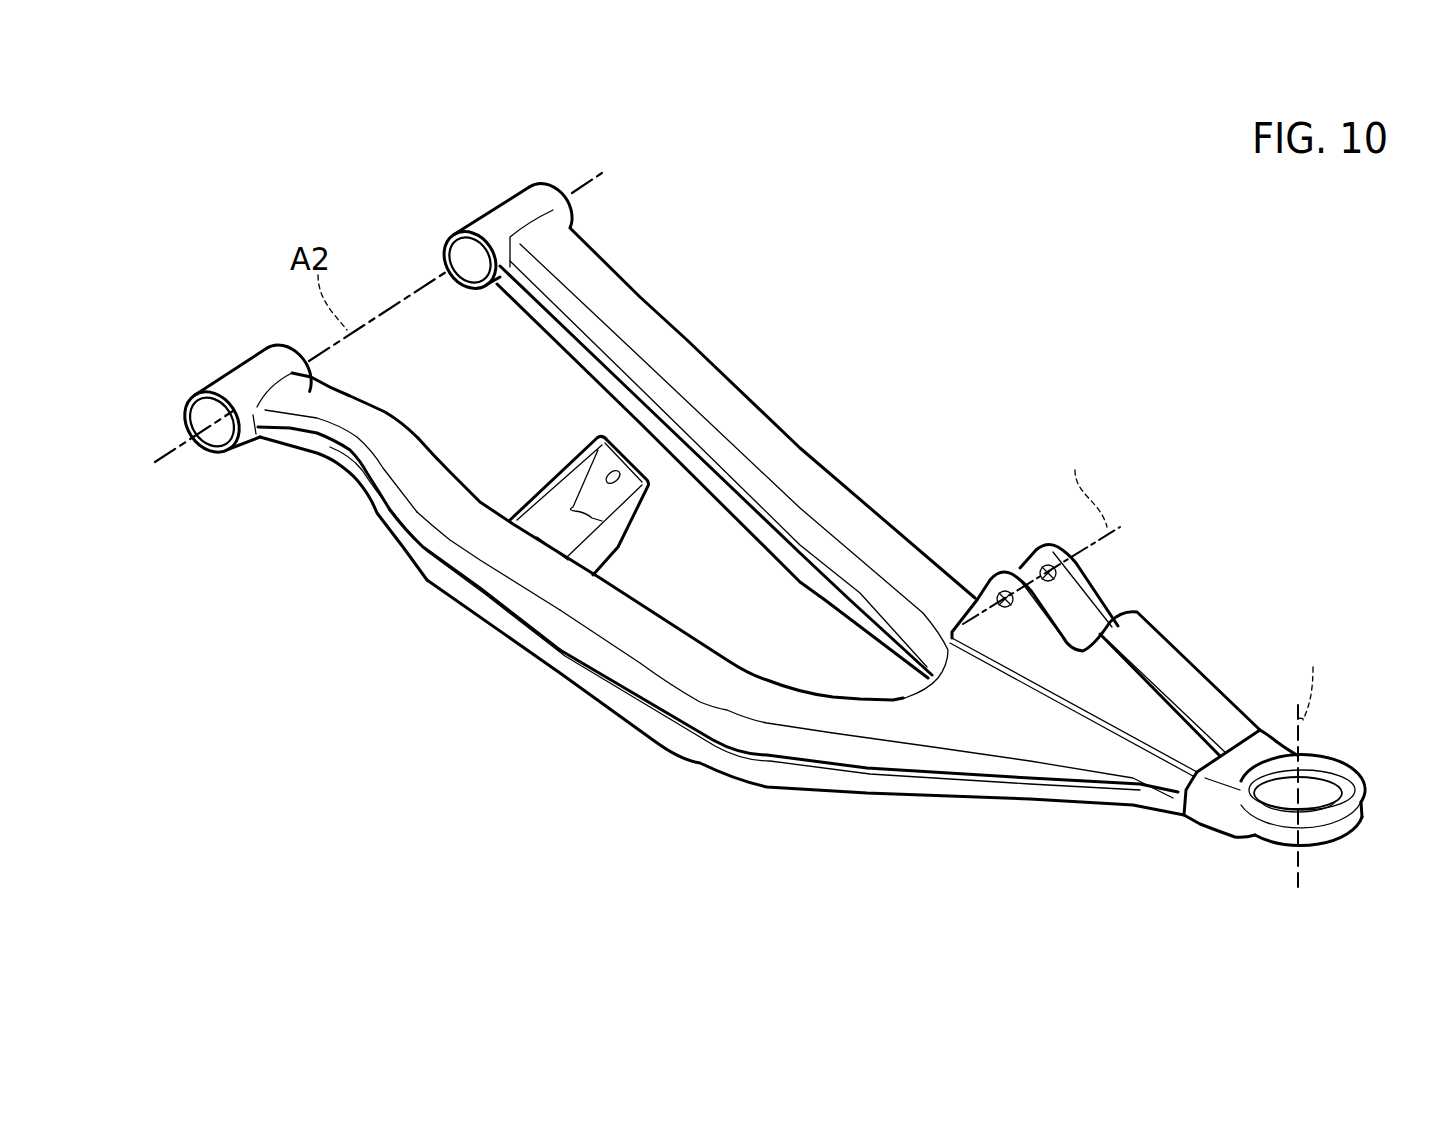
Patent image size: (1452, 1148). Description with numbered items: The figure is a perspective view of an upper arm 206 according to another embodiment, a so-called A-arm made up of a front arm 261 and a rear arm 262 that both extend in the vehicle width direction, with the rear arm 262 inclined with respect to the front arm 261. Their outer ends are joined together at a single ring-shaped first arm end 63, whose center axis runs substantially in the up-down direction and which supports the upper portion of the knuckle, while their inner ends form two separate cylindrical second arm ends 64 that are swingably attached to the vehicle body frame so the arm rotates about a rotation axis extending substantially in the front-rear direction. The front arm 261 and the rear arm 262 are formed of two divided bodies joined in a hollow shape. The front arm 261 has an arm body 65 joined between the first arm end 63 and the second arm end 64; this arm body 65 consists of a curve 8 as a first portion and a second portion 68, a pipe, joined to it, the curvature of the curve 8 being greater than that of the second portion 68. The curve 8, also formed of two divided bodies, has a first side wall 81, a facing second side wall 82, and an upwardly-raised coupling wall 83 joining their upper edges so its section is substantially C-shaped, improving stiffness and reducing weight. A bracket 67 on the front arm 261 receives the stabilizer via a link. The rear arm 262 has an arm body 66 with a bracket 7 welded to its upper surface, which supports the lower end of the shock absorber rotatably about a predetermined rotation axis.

The upper arm 206 is at (740, 235).
The front arm 261 is at (701, 594).
The rear arm 262 is at (736, 464).
The second arm end 64 is at (507, 210).
The arm body 65 is at (410, 585).
The arm body 66 is at (773, 445).
The bracket 67 is at (557, 470).
The second portion 68 is at (492, 578).
The bracket 7 is at (1170, 668).
The curve 8 is at (386, 532).
The first side wall 81 is at (290, 428).
The second side wall 82 is at (350, 405).
The coupling wall 83 is at (390, 445).
The first arm end 63 is at (1352, 783).